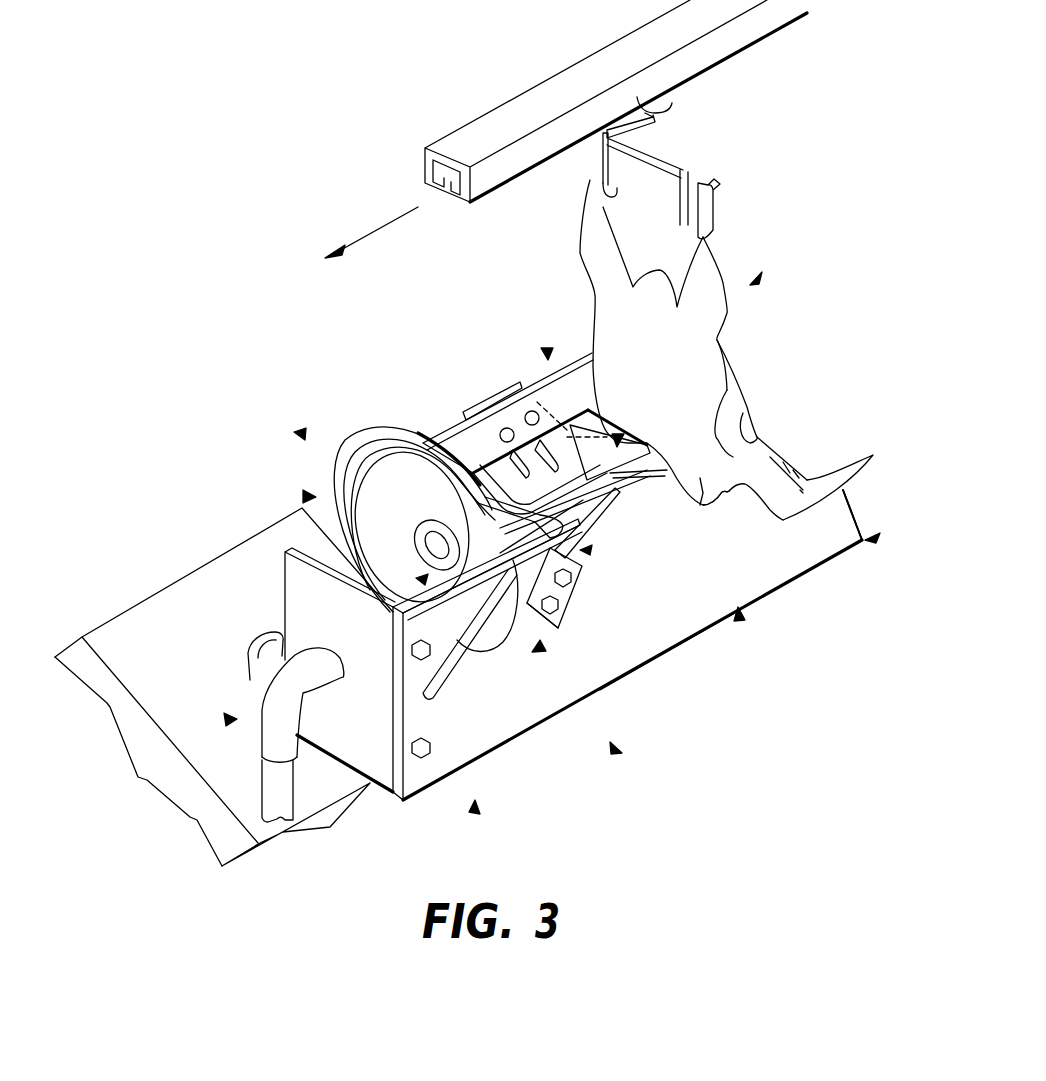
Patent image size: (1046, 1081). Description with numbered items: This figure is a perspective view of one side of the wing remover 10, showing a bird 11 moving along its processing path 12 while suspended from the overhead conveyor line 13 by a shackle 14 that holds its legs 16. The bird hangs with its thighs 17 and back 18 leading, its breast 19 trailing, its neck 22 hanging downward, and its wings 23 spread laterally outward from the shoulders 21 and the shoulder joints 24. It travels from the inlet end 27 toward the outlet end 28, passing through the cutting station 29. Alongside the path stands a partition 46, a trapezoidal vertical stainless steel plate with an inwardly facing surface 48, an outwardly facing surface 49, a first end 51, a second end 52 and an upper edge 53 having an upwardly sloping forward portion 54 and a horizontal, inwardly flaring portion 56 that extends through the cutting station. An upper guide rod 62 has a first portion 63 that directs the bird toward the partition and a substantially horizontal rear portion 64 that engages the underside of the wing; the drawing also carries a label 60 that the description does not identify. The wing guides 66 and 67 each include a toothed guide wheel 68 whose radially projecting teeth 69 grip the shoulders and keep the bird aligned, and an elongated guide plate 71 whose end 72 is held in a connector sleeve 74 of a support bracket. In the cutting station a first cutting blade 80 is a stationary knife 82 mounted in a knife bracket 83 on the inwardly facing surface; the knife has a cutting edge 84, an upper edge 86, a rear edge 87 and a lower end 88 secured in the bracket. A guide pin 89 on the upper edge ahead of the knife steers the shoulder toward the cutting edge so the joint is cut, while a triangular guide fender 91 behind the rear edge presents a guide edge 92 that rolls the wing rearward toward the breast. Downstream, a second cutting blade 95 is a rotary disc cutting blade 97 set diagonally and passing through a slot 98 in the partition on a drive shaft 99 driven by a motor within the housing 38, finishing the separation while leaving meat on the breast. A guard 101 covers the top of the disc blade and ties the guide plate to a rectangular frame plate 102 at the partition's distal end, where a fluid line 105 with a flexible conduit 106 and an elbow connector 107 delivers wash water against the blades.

The wing remover 10 is at (613, 745).
The bird 11 is at (755, 284).
The processing path 12 is at (380, 229).
The overhead conveyor line 13 is at (762, 22).
The shackle 14 is at (665, 140).
The legs 16 is at (606, 206).
The thighs 17 is at (690, 278).
The back 18 is at (703, 388).
The breast 19 is at (742, 358).
The shoulders 21 is at (737, 393).
The neck 22 is at (703, 495).
The wings 23 is at (803, 493).
The shoulder joints 24 is at (750, 413).
The inlet end 27 is at (875, 540).
The outlet end 28 is at (475, 805).
The cutting station 29 is at (310, 497).
The housing 38 is at (143, 662).
The partition 46 is at (740, 615).
The inwardly facing surface 48 is at (713, 616).
The outwardly facing surface 49 is at (783, 458).
The first end 51 is at (853, 514).
The second end 52 is at (400, 708).
The upper edge 53 is at (422, 583).
The upwardly sloping forward portion 54 is at (833, 470).
The inwardly projecting flaring portion 56 is at (452, 592).
The cutting assembly 60 is at (548, 355).
The upper guide rod 62 is at (617, 440).
The first portion 63 is at (522, 502).
The rear portion 64 is at (488, 400).
The wing guide 66 is at (645, 473).
The wing guide 67 is at (611, 470).
The guide wheel 68 is at (630, 442).
The teeth 69 is at (484, 506).
The guide plate 71 is at (540, 455).
The end of guide plate 72 is at (588, 412).
The connector sleeve 74 is at (500, 435).
The first cutting blade 80 is at (540, 645).
The stationary knife 82 is at (603, 549).
The knife bracket 83 is at (567, 604).
The cutting edge 84 is at (610, 522).
The upper edge 86 is at (625, 497).
The rear edge 87 is at (588, 550).
The lower end 88 is at (578, 582).
The guide pin 89 is at (702, 498).
The guide fender 91 is at (540, 522).
The guide edge 92 is at (550, 540).
The second cutting blade 95 is at (302, 437).
The rotary disc cutting blade 97 is at (420, 499).
The slot 98 is at (443, 688).
The drive shaft 99 is at (280, 637).
The guard 101 is at (358, 428).
The frame plate 102 is at (331, 620).
The fluid line 105 is at (232, 719).
The flexible conduit 106 is at (272, 787).
The elbow connector 107 is at (302, 709).